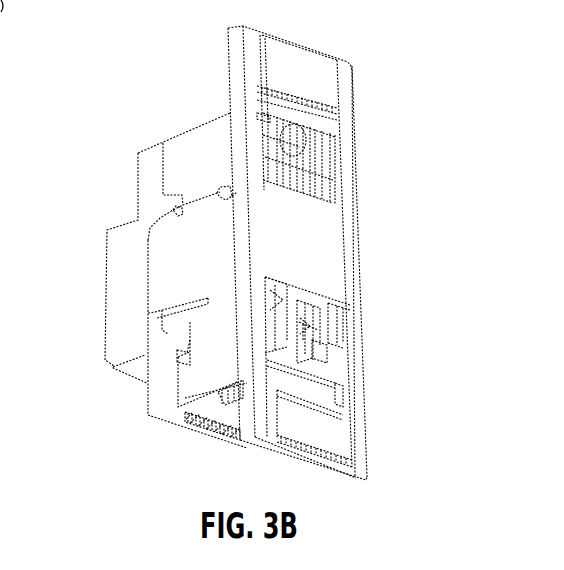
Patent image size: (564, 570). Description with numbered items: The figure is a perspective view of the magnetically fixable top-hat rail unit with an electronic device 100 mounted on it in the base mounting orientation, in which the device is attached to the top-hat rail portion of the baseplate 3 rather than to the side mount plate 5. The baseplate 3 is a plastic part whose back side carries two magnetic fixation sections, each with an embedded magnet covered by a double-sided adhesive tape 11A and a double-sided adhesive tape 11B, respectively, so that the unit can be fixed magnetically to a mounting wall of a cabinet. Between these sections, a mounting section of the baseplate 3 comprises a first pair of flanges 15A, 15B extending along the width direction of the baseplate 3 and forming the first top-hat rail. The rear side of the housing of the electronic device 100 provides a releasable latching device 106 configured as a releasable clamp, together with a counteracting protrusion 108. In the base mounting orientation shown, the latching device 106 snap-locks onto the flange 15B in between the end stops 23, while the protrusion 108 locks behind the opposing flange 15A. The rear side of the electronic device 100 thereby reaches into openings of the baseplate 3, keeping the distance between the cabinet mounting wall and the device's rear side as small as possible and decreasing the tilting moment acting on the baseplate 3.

The electronic device 100 is at (113, 408).
The baseplate 3 is at (217, 24).
The side mount plate 5 is at (187, 258).
The double-sided adhesive tape 11A is at (318, 425).
The double-sided adhesive tape 11B is at (304, 75).
The flange 15A is at (299, 311).
The flange 15B is at (284, 200).
The end stops 23 is at (280, 200).
The latching device 106 is at (336, 186).
The protrusion 108 is at (308, 328).